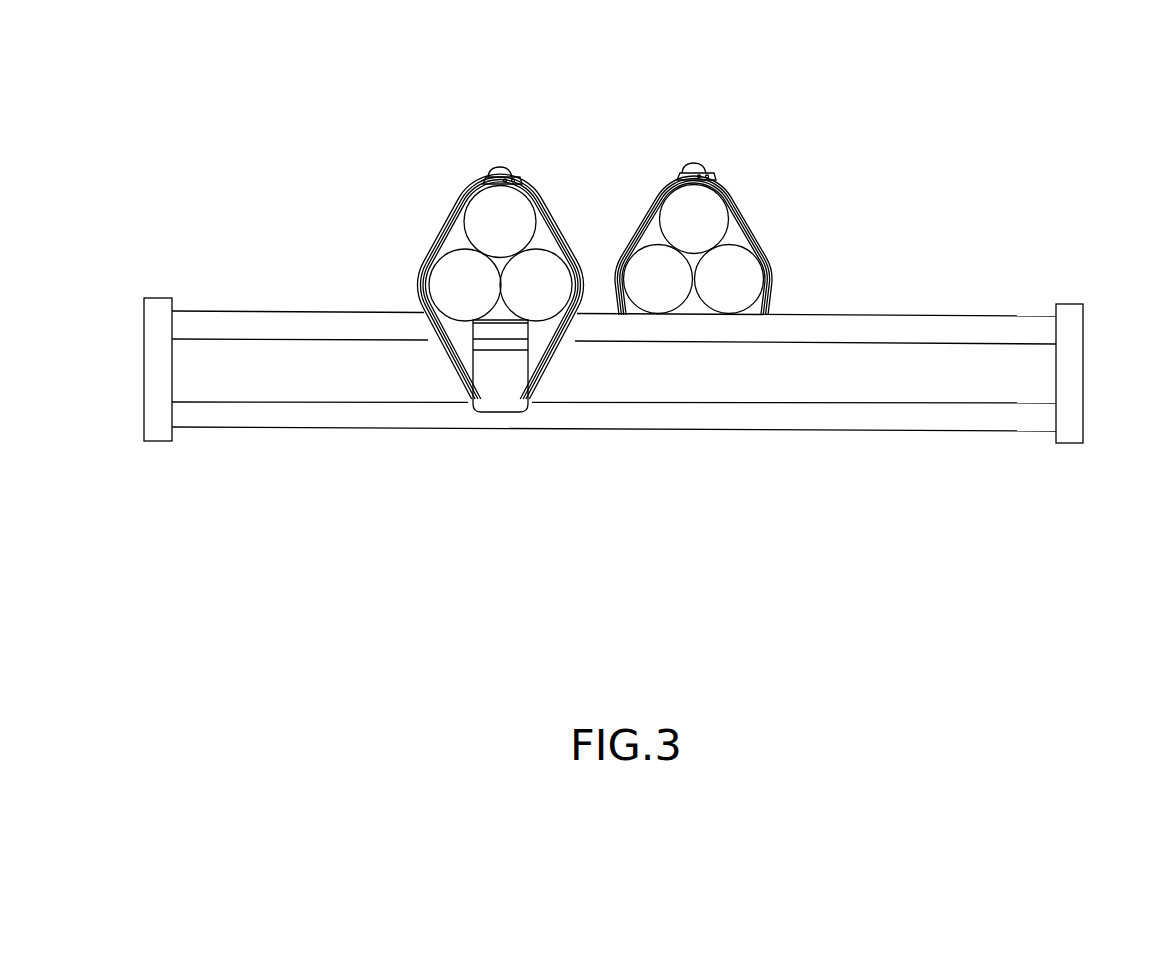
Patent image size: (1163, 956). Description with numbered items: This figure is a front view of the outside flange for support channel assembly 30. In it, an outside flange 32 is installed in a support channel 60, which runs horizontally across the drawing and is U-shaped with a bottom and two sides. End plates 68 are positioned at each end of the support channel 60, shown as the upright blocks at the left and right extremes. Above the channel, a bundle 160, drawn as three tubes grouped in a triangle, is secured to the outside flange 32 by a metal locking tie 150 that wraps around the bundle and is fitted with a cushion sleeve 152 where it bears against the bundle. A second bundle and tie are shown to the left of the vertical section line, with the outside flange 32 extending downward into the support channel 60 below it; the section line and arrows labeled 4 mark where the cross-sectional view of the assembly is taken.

The section line 4- 4 is at (595, 512).
The outside flange for support channel assembly 30 is at (376, 146).
The outside flange 32 is at (500, 387).
The support channel 60 is at (862, 418).
The end plates 68 is at (156, 315).
The metal locking tie 150 is at (690, 162).
The cushion sleeve 152 is at (735, 200).
The bundle 160 is at (743, 266).